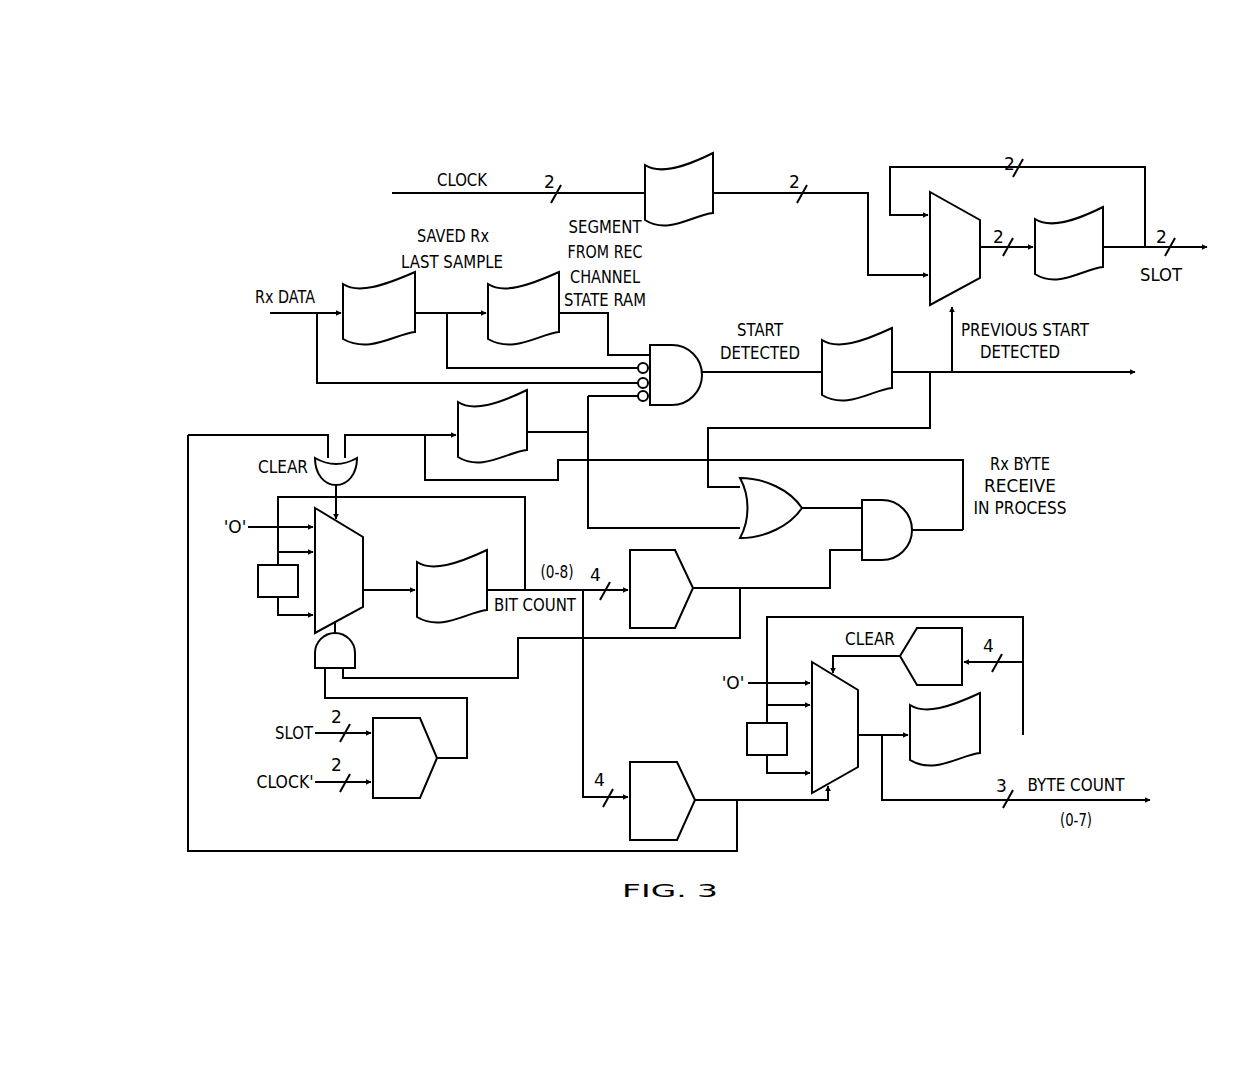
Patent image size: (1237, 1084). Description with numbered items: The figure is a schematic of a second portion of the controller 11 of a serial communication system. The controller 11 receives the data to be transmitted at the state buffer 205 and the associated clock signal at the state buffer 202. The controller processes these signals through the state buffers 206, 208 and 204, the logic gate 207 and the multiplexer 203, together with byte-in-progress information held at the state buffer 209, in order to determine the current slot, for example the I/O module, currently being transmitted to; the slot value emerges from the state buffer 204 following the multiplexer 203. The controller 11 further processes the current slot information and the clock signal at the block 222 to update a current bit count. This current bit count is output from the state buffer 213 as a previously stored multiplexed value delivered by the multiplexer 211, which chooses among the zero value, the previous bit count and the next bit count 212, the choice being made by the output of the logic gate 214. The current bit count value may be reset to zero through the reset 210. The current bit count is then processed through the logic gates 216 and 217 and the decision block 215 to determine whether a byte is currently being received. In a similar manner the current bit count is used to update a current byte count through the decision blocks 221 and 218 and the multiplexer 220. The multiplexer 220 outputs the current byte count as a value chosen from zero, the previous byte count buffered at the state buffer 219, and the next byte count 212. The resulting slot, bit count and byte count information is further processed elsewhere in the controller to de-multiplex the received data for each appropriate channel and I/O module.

The controller 11 is at (1168, 143).
The state buffer 202 is at (668, 170).
The multiplexer 203 is at (942, 193).
The state buffer 204 is at (1058, 226).
The state buffer 205 is at (365, 292).
The state buffer 206 is at (508, 292).
The logic gate 207 is at (672, 347).
The state buffer 208 is at (840, 345).
The state buffer 209 is at (528, 412).
The reset 210 is at (357, 474).
The multiplexer 211 is at (365, 540).
The next bit count 212 is at (258, 583).
The state buffer 213 is at (460, 556).
The logic gate 214 is at (352, 654).
The decision block 215 is at (693, 580).
The logic gate 216 is at (795, 493).
The logic gate 217 is at (898, 509).
The decision block 218 is at (933, 628).
The previous byte count buffer 219 is at (985, 745).
The multiplexer 220 is at (818, 666).
The decision block 221 is at (653, 762).
The block 222 is at (430, 793).